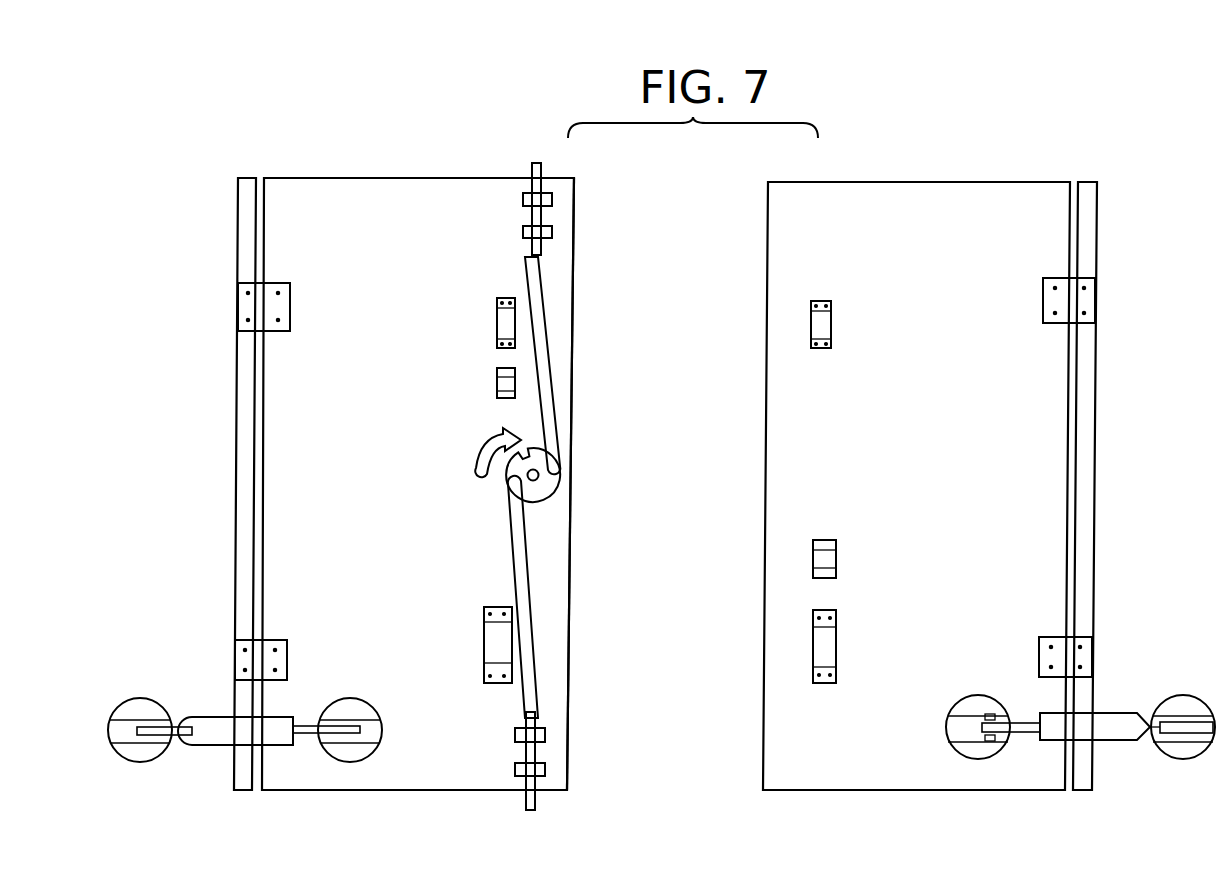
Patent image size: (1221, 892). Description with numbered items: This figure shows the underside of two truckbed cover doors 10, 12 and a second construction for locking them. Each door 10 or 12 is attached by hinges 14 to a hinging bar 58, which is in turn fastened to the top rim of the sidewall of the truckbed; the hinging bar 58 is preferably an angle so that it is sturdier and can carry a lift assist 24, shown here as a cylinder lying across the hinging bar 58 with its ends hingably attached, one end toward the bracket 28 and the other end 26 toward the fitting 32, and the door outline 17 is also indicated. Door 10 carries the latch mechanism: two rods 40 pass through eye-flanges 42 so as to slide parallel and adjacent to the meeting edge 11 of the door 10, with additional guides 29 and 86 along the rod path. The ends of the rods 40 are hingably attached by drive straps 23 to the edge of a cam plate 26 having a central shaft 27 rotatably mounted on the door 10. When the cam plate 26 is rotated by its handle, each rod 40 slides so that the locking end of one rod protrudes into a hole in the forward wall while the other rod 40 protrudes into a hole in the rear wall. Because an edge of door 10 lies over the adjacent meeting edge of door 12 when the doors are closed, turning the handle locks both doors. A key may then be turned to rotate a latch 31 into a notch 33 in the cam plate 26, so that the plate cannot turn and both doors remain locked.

The door 10 is at (412, 163).
The meeting edge 11 is at (575, 205).
The door 12 is at (921, 177).
The hinge 14 is at (243, 310).
The door frame edge 17 is at (300, 178).
The drive strap 23 is at (548, 400).
The lift assist 24 is at (218, 745).
The cam plate 26 is at (548, 442).
The central shaft 27 is at (540, 477).
The end bracket 28 is at (140, 768).
The guide bracket 29 is at (515, 378).
The latch 31 is at (515, 308).
The end fitting 32 is at (368, 750).
The notch 33 is at (480, 450).
The rod 40 is at (543, 168).
The eye-flange 42 is at (515, 200).
The hinging bar 58 is at (243, 477).
The guide bracket 86 is at (500, 633).